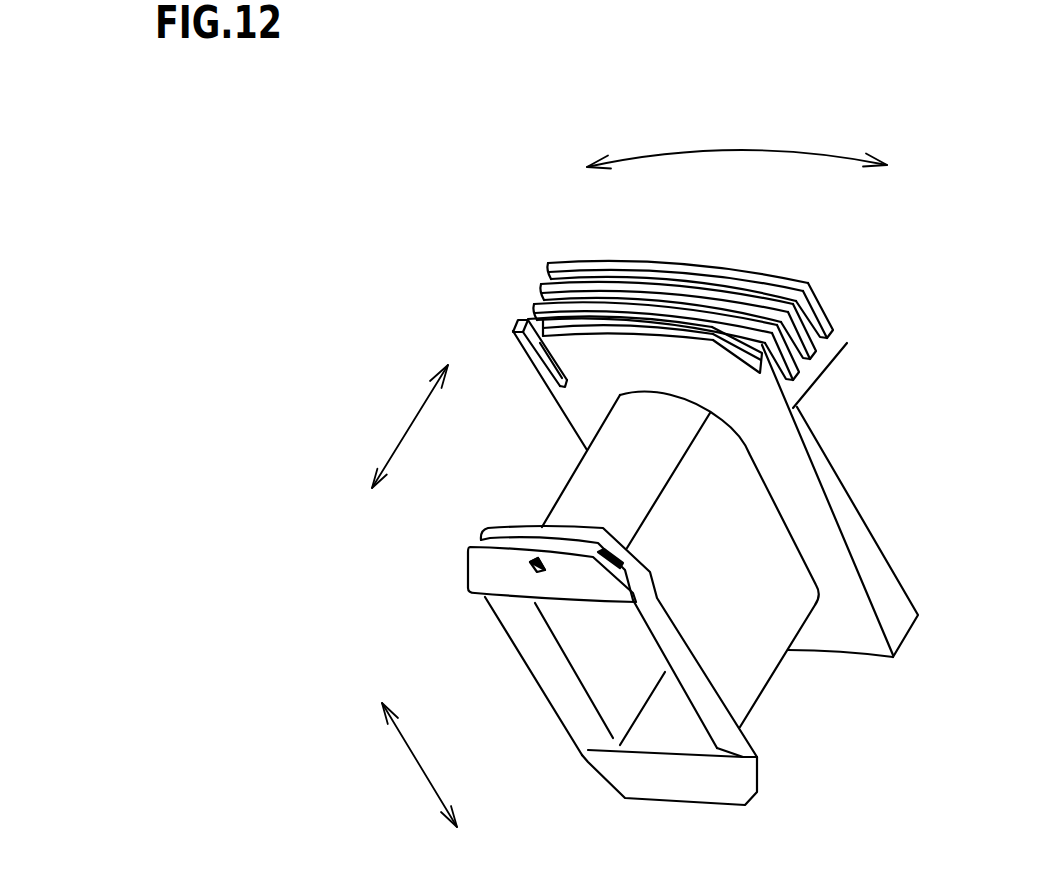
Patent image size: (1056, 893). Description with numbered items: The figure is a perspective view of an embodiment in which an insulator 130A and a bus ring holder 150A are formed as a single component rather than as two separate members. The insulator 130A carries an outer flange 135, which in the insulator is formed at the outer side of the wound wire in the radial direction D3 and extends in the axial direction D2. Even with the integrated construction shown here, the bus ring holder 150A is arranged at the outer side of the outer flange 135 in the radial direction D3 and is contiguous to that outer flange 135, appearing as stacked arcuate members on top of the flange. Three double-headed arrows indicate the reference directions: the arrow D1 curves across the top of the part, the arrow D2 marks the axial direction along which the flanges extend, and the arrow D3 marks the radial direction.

The insulator 130A is at (760, 533).
The outer flange 135 is at (837, 492).
The bus ring holder 150A is at (847, 343).
The direction D1 is at (737, 150).
The axial direction D2 is at (425, 780).
The radial direction D3 is at (400, 438).